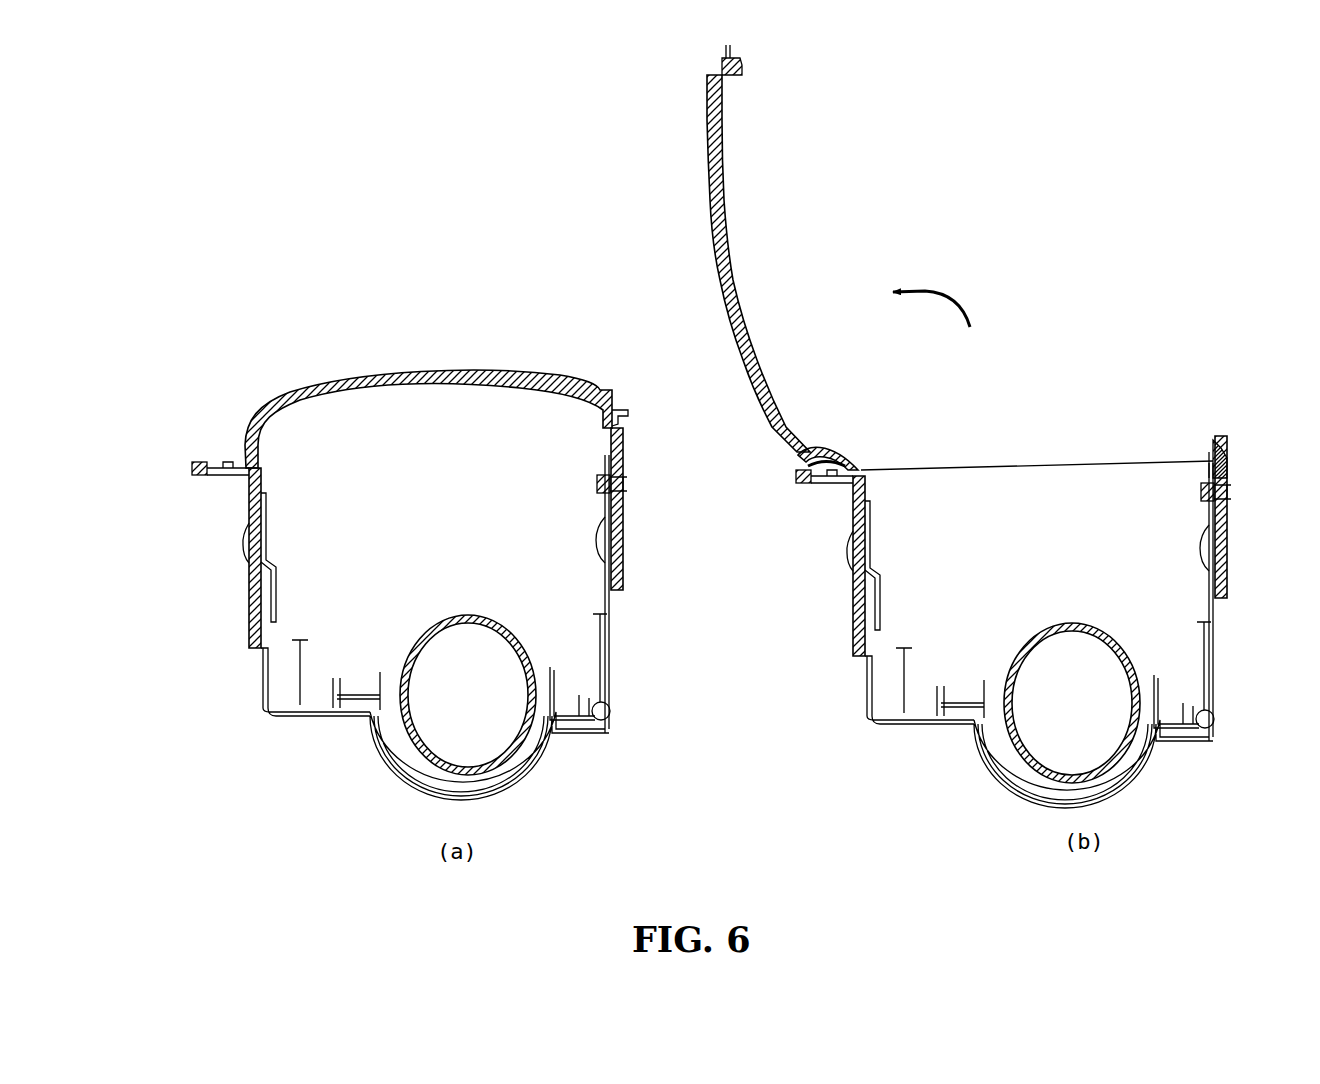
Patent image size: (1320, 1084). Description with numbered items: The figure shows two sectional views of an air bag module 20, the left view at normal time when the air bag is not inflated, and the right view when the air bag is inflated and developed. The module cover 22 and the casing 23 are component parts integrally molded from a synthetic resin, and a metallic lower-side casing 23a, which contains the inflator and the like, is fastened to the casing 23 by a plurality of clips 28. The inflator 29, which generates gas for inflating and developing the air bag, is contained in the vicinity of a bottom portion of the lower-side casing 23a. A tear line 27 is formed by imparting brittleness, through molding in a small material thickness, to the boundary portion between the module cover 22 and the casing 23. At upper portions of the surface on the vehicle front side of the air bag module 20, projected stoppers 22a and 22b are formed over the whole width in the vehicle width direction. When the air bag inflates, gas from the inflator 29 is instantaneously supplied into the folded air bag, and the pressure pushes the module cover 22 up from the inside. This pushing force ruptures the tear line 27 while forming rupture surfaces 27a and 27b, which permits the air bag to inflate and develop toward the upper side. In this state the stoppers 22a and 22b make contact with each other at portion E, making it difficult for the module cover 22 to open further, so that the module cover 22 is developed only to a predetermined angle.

The air bag module 20 is at (299, 343).
The module cover 22 is at (458, 370).
The stopper 22a is at (247, 428).
The stopper 22b is at (202, 460).
The casing 23 is at (624, 548).
The lower-side casing 23a is at (615, 688).
The tear line 27 is at (631, 428).
The rupture surface 27a is at (750, 68).
The rupture surface 27b is at (1217, 436).
The clip 28 is at (626, 493).
The inflator 29 is at (546, 647).
The contact portion E is at (795, 467).